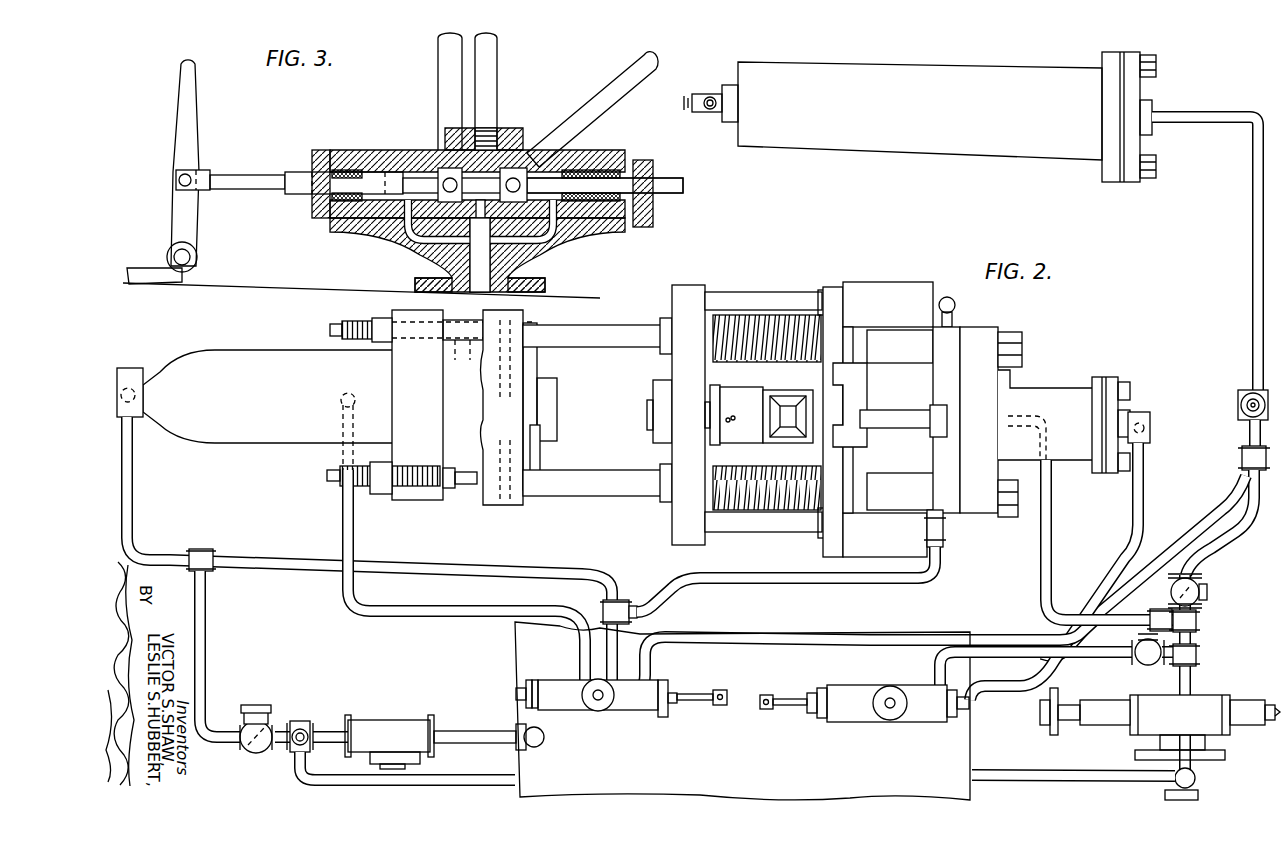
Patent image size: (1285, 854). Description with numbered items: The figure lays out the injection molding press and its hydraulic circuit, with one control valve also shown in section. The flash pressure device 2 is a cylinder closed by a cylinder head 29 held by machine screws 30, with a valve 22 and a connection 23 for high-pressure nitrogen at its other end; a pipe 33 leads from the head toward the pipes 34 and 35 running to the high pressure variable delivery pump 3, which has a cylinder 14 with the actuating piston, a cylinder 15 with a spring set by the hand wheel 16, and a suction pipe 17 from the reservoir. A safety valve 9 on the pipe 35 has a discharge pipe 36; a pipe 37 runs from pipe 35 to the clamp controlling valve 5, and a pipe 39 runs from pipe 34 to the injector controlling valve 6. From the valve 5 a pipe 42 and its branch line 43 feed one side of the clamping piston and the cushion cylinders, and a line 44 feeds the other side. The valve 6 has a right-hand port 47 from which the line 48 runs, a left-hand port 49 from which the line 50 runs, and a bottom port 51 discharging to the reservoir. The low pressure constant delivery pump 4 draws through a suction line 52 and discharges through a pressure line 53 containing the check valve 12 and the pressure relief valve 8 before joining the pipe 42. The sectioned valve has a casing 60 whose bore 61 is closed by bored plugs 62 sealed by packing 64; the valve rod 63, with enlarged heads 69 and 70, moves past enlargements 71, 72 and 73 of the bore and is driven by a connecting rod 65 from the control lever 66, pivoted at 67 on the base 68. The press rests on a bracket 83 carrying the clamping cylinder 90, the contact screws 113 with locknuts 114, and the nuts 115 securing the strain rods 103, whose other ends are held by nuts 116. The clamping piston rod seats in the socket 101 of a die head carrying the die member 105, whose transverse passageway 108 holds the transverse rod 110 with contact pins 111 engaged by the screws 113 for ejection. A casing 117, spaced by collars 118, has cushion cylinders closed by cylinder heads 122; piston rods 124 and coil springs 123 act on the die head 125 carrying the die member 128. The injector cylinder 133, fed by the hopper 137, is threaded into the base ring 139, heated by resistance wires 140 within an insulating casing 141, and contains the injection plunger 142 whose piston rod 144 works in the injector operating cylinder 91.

In FIG. 2, the flash pressure device 2 is at (948, 66).
In FIG. 2, the high pressure variable delivery pump 3 is at (1163, 703).
In FIG. 2, the low pressure constant delivery pump 4 is at (400, 726).
In FIG. 2, the clamp controlling valve 5 is at (558, 680).
In FIG. 3, the injector controlling valve 6 is at (357, 150).
In FIG. 2, the injector controlling valve 6 is at (844, 690).
In FIG. 2, the pressure relief valve 8 is at (298, 720).
In FIG. 2, the safety valve 9 is at (1136, 620).
In FIG. 2, the check valve 12 is at (252, 705).
In FIG. 2, the cylinder 14 is at (1248, 712).
In FIG. 2, the cylinder 15 is at (1100, 722).
In FIG. 2, the hand wheel 16 is at (1050, 728).
In FIG. 2, the suction pipe 17 is at (1072, 770).
In FIG. 2, the valve 22 is at (700, 112).
In FIG. 2, the connection 23 is at (711, 97).
In FIG. 2, the cylinder head 29 is at (1135, 90).
In FIG. 2, the machine screws 30 is at (1156, 160).
In FIG. 2, the pipe 33 is at (1255, 220).
In FIG. 2, the pipe 34 is at (1202, 548).
In FIG. 2, the pipe 35 is at (1197, 645).
In FIG. 2, the discharge pipe 36 is at (1002, 702).
In FIG. 2, the pipe 37 is at (760, 640).
In FIG. 3, the pipe 39 is at (489, 75).
In FIG. 2, the pipe 39 is at (913, 715).
In FIG. 2, the pipe 42 is at (127, 495).
In FIG. 2, the branch line 43 is at (938, 556).
In FIG. 2, the line 44 is at (458, 620).
In FIG. 3, the right-hand port 47 is at (545, 187).
In FIG. 3, the line 48 is at (592, 104).
In FIG. 2, the line 48 is at (1047, 508).
In FIG. 3, the left-hand port 49 is at (420, 185).
In FIG. 3, the line 50 is at (438, 92).
In FIG. 2, the line 50 is at (1128, 502).
In FIG. 3, the bottom port 51 is at (497, 272).
In FIG. 2, the suction line 52 is at (483, 730).
In FIG. 2, the pressure line 53 is at (200, 636).
In FIG. 3, the casing 60 is at (342, 150).
In FIG. 3, the bore 61 is at (400, 236).
In FIG. 3, the bored plugs 62 is at (318, 150).
In FIG. 3, the valve rod 63 is at (296, 172).
In FIG. 3, the packing 64 is at (590, 165).
In FIG. 3, the connecting rod 65 is at (265, 180).
In FIG. 3, the control lever 66 is at (190, 152).
In FIG. 3, the shaft 67 is at (190, 257).
In FIG. 3, the base 68 is at (143, 268).
In FIG. 3, the enlarged head 69 is at (447, 176).
In FIG. 3, the enlarged head 70 is at (517, 176).
In FIG. 3, the enlargement 71 is at (425, 243).
In FIG. 3, the enlargement 72 is at (525, 236).
In FIG. 3, the enlargement 73 is at (481, 218).
In FIG. 2, the bracket 83 is at (397, 312).
In FIG. 2, the clamping cylinder 90 is at (264, 358).
In FIG. 2, the injector operating cylinder 91 is at (1068, 398).
In FIG. 2, the socket 101 is at (523, 318).
In FIG. 2, the strain rods 103 is at (607, 332).
In FIG. 2, the die member 105 is at (550, 383).
In FIG. 2, the transverse passageway 108 is at (540, 430).
In FIG. 2, the transverse rod 110 is at (533, 378).
In FIG. 2, the contact pins 111 is at (507, 410).
In FIG. 2, the contact screws 113 is at (366, 342).
In FIG. 2, the locknuts 114 is at (452, 350).
In FIG. 2, the nuts 115 is at (376, 320).
In FIG. 2, the nuts 116 is at (1012, 332).
In FIG. 2, the casing 117 is at (840, 292).
In FIG. 2, the spacing collars 118 is at (917, 348).
In FIG. 2, the cylinder heads 122 is at (822, 290).
In FIG. 2, the coil springs 123 is at (770, 318).
In FIG. 2, the piston rods 124 is at (753, 300).
In FIG. 2, the die head 125 is at (693, 285).
In FIG. 2, the die member 128 is at (652, 384).
In FIG. 2, the injector cylinder 133 is at (713, 386).
In FIG. 2, the hopper 137 is at (788, 396).
In FIG. 2, the base ring 139 is at (851, 405).
In FIG. 2, the resistance wires 140 is at (733, 415).
In FIG. 2, the insulating casing 141 is at (746, 390).
In FIG. 2, the injection plunger 142 is at (890, 412).
In FIG. 2, the piston rod 144 is at (933, 430).